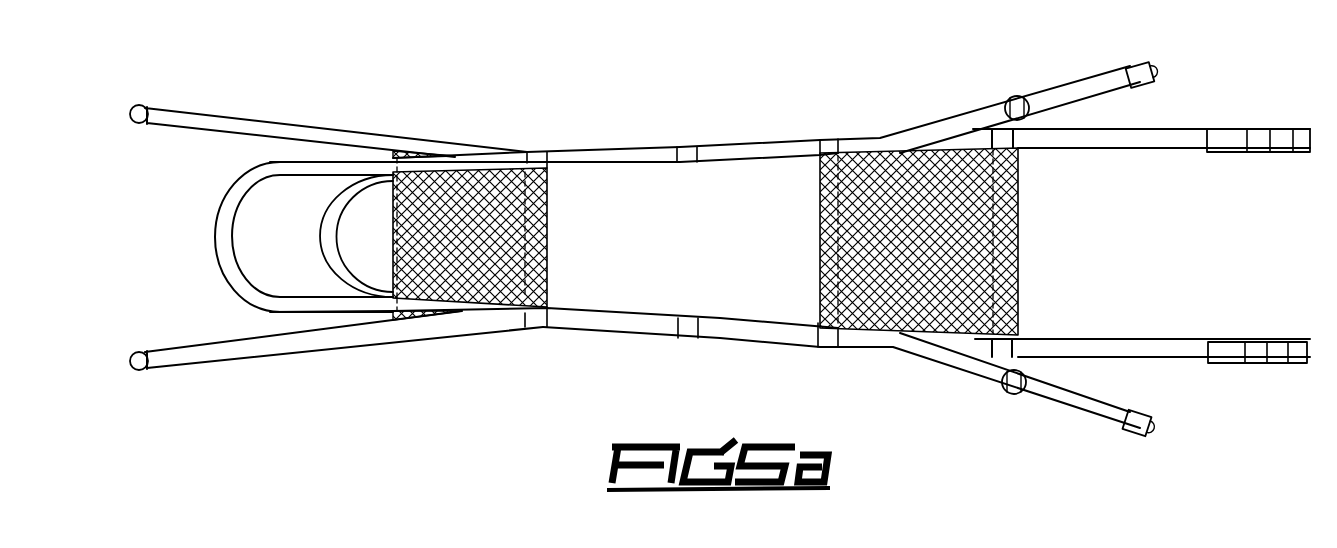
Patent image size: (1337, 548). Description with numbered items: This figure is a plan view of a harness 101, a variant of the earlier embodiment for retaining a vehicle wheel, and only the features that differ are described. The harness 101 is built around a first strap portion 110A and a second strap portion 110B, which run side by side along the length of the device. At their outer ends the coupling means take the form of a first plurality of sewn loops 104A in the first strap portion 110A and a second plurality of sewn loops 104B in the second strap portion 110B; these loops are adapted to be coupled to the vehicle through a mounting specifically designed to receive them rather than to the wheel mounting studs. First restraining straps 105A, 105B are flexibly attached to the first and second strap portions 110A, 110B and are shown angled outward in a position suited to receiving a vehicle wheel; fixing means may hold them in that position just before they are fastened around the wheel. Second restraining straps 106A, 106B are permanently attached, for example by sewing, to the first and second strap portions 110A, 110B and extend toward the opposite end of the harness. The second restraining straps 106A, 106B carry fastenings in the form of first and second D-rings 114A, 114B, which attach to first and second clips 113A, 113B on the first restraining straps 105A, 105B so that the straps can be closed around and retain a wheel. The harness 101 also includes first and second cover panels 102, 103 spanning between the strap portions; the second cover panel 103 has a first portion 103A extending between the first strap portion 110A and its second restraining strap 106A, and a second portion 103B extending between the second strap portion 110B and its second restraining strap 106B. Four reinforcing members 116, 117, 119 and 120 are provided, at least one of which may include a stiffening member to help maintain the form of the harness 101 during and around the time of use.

The harness 101 is at (712, 100).
The first cover panel 102 is at (890, 258).
The second cover panel 103 is at (498, 262).
The first portion of second cover panel 103A is at (422, 152).
The second portion of second cover panel 103B is at (405, 322).
The first plurality of sewn loops 104A is at (1305, 127).
The second plurality of sewn loops 104B is at (1305, 367).
The first restraining strap 105A is at (1087, 78).
The first restraining strap 105B is at (1092, 408).
The second restraining strap 106A is at (368, 133).
The second restraining strap 106B is at (320, 348).
The first strap portion 110A is at (1133, 143).
The second strap portion 110B is at (1108, 350).
The first clip 113A is at (1152, 70).
The second clip 113B is at (1152, 433).
The first D-ring 114A is at (137, 104).
The second D-ring 114B is at (138, 372).
The reinforcing member 116 is at (1000, 258).
The reinforcing member 117 is at (822, 197).
The reinforcing member 119 is at (553, 207).
The reinforcing member 120 is at (390, 250).